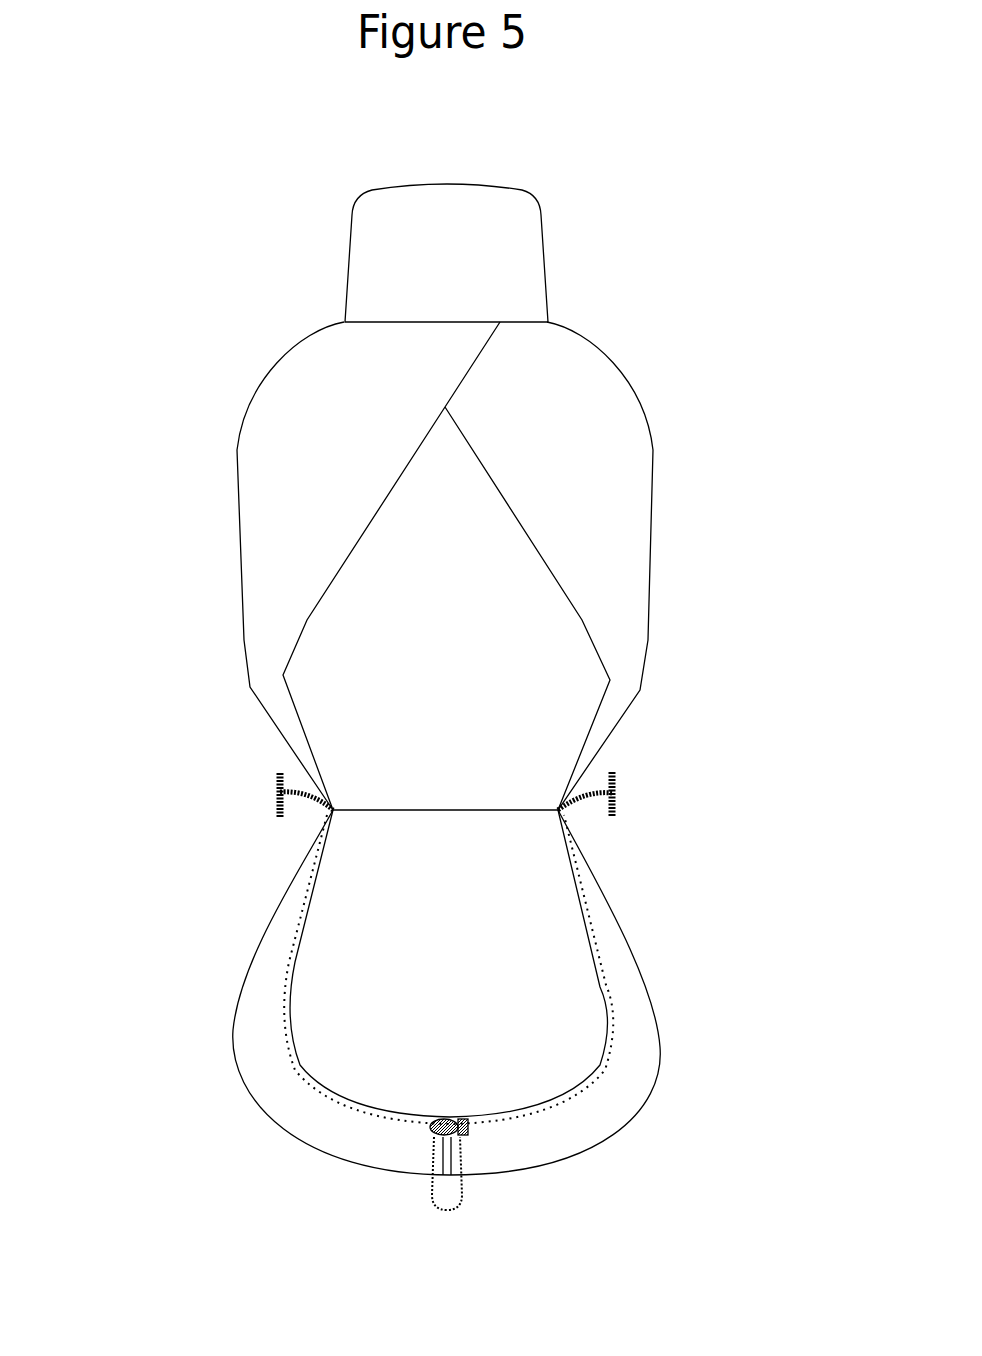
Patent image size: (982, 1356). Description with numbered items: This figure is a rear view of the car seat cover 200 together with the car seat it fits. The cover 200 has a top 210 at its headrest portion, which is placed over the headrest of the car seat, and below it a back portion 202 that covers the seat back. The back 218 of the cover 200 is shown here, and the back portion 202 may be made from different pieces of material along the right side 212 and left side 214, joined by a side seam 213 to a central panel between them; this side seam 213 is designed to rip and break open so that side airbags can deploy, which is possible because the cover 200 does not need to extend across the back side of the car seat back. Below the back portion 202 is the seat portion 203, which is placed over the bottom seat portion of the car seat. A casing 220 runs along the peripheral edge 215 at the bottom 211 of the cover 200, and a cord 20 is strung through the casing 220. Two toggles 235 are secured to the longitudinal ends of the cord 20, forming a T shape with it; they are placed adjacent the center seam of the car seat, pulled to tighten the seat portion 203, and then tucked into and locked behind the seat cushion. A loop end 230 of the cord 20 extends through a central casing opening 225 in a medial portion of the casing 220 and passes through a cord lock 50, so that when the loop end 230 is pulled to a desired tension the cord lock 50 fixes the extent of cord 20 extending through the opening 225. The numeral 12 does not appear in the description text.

The car seat cover 200 is at (236, 486).
The seat back 12 is at (281, 586).
The top 210 is at (405, 188).
The left side 214 is at (251, 407).
The right side 212 is at (637, 393).
The side seam 213 is at (652, 567).
The back 218 is at (338, 396).
The back portion 202 is at (598, 467).
The toggles 235 is at (613, 790).
The cord 20 is at (295, 963).
The bottom 211 is at (327, 1163).
The seat portion 203 is at (628, 1000).
The casing 220 is at (293, 1058).
The peripheral edge 215 is at (602, 997).
The central casing opening 225 is at (432, 1125).
The cord lock 50 is at (447, 1118).
The loop end 230 is at (437, 1208).